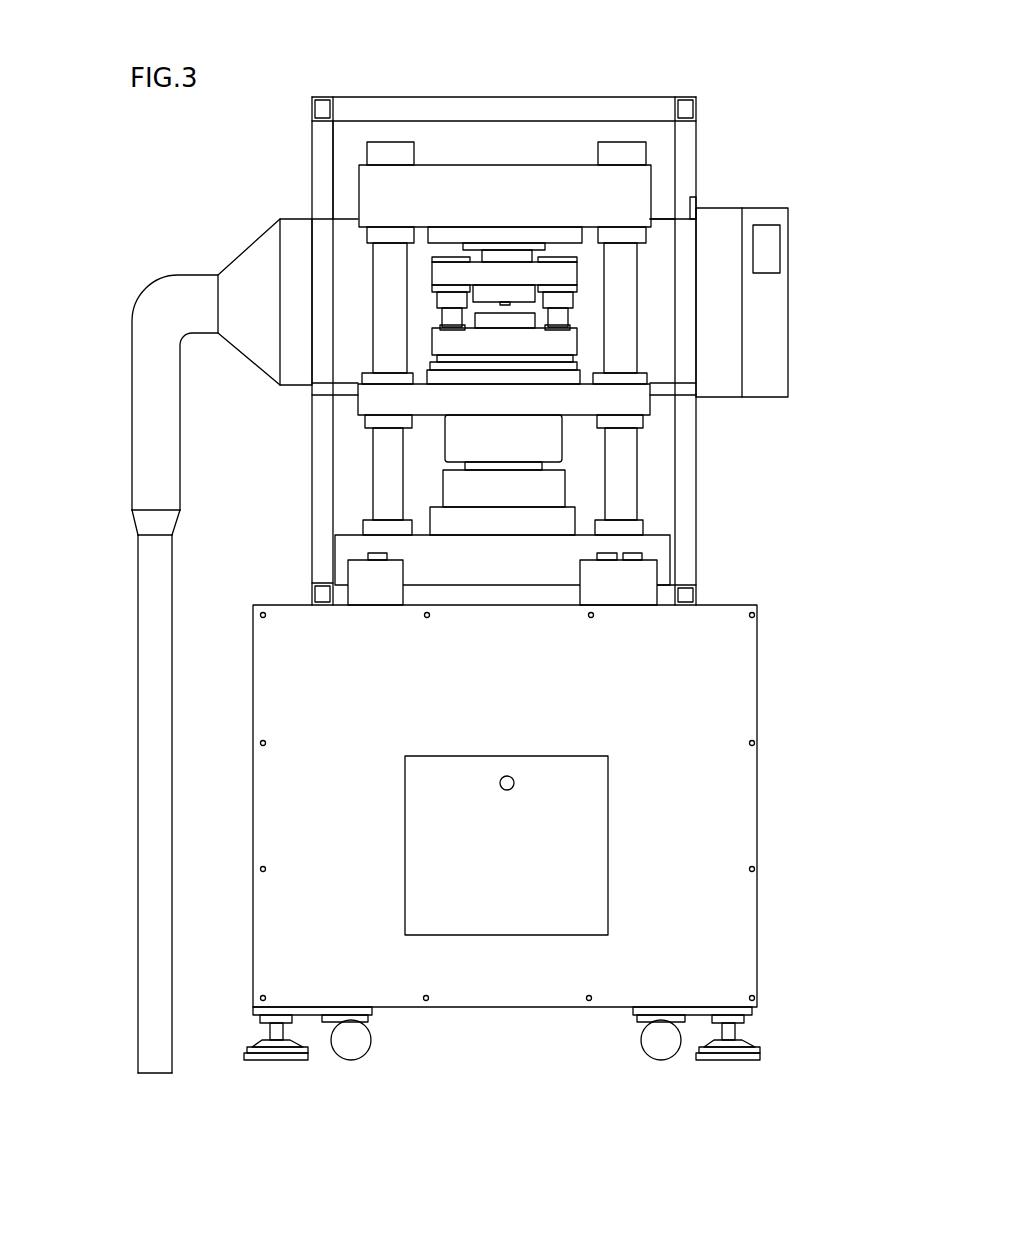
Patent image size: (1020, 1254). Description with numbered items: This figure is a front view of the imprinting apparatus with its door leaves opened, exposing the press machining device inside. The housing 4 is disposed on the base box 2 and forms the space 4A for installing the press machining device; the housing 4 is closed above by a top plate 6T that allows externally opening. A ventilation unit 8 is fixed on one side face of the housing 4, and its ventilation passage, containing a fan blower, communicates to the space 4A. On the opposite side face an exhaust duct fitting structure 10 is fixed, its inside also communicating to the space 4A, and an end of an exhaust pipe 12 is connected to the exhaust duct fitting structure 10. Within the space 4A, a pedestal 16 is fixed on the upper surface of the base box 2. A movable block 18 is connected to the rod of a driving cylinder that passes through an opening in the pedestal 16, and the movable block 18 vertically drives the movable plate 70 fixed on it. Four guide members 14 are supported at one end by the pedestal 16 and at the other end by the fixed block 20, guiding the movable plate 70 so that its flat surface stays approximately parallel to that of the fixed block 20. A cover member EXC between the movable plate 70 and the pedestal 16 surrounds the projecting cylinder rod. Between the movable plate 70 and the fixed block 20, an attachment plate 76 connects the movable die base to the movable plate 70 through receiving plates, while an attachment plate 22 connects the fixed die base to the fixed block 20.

The base box 2 is at (733, 797).
The housing 4 is at (688, 550).
The space for installing the press machining device 4A is at (350, 140).
The top plate 6T is at (662, 218).
The ventilation unit 8 is at (780, 287).
The exhaust duct fitting structure 10 is at (253, 258).
The exhaust pipe 12 is at (133, 393).
The guide members 14 is at (377, 478).
The pedestal 16 is at (495, 575).
The movable block 18 is at (462, 443).
The fixed block 20 is at (540, 173).
The attachment plate 22 is at (462, 227).
The movable plate 70 is at (627, 403).
The attachment plate 76 is at (580, 363).
The cover member EXC is at (455, 488).